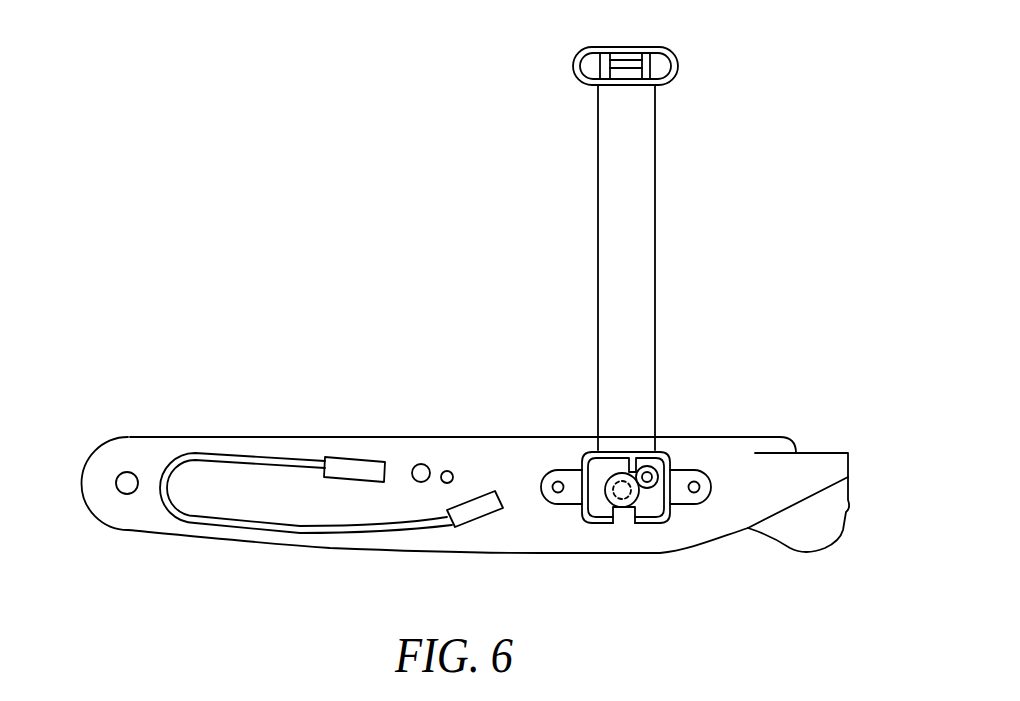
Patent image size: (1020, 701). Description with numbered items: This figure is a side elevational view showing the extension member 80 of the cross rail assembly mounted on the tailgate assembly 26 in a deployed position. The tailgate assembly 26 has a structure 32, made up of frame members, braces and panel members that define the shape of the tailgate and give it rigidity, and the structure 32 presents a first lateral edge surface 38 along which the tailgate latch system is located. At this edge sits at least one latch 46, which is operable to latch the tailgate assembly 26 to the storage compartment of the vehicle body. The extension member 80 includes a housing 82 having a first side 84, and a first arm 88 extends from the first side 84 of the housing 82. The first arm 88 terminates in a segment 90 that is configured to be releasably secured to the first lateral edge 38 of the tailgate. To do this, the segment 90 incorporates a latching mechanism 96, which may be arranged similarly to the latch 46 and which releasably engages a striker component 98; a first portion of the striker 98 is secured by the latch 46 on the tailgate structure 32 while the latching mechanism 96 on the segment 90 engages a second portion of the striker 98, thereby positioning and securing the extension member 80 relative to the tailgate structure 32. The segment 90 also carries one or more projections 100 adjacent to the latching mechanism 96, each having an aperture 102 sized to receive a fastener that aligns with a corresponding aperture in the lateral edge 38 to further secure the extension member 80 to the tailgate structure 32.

The tailgate assembly 26 is at (131, 434).
The structure 32 is at (318, 437).
The first lateral edge surface 38 is at (267, 497).
The latch 46 is at (658, 462).
The extension member 80 is at (732, 74).
The housing 82 is at (653, 43).
The first side 84 is at (660, 80).
The first arm 88 is at (655, 268).
The segment 90 is at (628, 413).
The latching mechanism 96 is at (586, 449).
The striker component 98 is at (643, 497).
The projection 100 is at (540, 485).
The aperture 102 is at (694, 486).